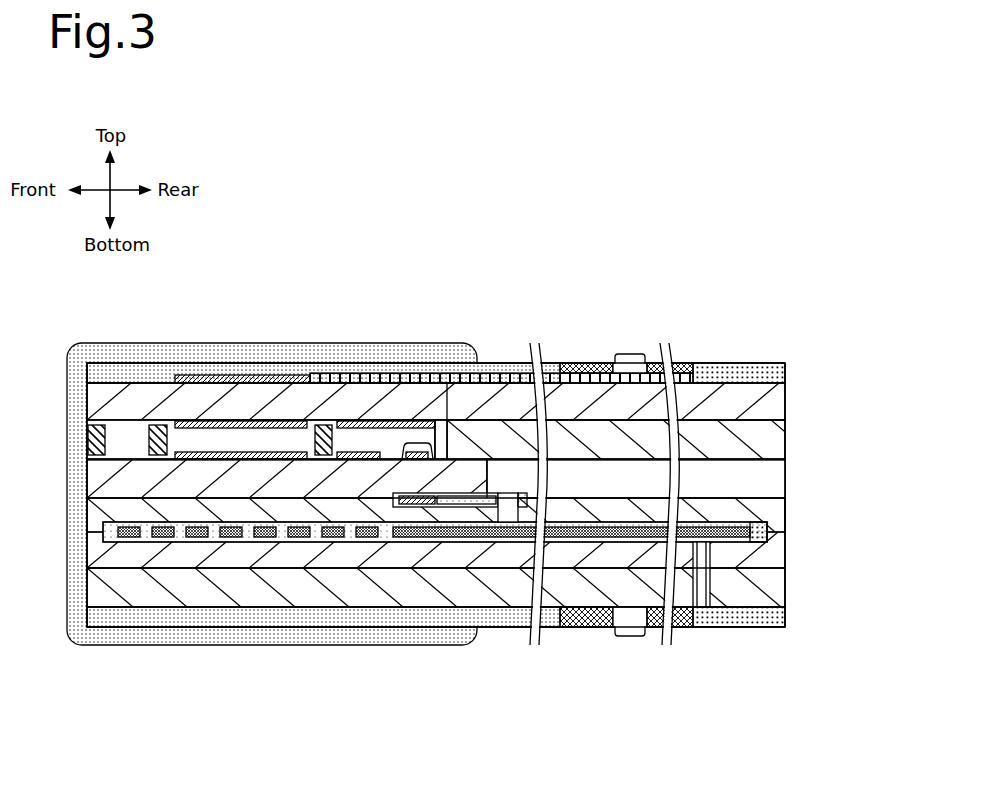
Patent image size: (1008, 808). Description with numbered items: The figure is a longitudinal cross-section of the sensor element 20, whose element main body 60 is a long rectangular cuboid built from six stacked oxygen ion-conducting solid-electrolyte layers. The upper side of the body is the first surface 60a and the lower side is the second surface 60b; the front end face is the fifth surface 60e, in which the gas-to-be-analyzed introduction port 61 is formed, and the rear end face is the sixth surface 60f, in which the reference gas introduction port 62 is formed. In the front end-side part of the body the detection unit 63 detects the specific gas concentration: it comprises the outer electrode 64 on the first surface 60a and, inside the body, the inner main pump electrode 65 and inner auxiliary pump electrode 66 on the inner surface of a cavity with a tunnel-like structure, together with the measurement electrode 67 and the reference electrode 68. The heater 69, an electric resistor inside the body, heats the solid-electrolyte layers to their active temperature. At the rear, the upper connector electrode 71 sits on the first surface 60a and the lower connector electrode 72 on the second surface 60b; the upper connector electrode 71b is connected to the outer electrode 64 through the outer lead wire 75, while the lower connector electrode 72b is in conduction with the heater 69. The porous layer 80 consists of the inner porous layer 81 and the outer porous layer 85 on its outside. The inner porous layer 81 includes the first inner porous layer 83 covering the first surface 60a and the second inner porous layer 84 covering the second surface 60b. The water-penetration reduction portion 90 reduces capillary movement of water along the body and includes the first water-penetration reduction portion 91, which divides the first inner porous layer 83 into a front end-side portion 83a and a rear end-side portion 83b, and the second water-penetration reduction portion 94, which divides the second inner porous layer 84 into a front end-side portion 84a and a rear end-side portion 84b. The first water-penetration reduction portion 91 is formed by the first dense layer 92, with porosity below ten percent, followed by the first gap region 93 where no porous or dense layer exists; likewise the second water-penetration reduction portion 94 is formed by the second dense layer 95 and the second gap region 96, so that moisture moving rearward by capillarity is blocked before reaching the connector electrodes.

The sensor element 20 is at (790, 206).
The element main body 60 is at (819, 416).
The first surface 60a is at (150, 372).
The second surface 60b is at (150, 610).
The fifth surface 60e is at (91, 512).
The sixth surface 60f is at (787, 511).
The gas-to-be-analyzed introduction port 61 is at (88, 437).
The reference gas introduction port 62 is at (787, 482).
The detection unit 63 is at (380, 284).
The outer electrode 64 is at (190, 375).
The inner main pump electrode 65 is at (236, 423).
The inner auxiliary pump electrode 66 is at (417, 451).
The measurement electrode 67 is at (438, 493).
The reference electrode 68 is at (449, 382).
The heater 69 is at (302, 543).
The upper connector electrode 71 is at (835, 356).
The upper connector electrode 71b is at (787, 371).
The lower connector electrode 72 is at (835, 588).
The lower connector electrode 72b is at (787, 603).
The outer lead wire 75 is at (688, 363).
The porous layer 80 is at (441, 223).
The inner porous layer 81 is at (503, 254).
The first inner porous layer 83 is at (524, 290).
The front end-side portion 83a is at (535, 344).
The rear end-side portion 83b is at (656, 350).
The second inner porous layer 84 is at (522, 698).
The front end-side portion 84a is at (516, 628).
The rear end-side portion 84b is at (680, 628).
The outer porous layer 85 is at (270, 344).
The water-penetration reduction portion 90 is at (594, 252).
The first water-penetration reduction portion 91 is at (637, 298).
The first dense layer 92 is at (585, 362).
The first gap region 93 is at (630, 354).
The second water-penetration reduction portion 94 is at (637, 682).
The second dense layer 95 is at (585, 628).
The second gap region 96 is at (630, 638).